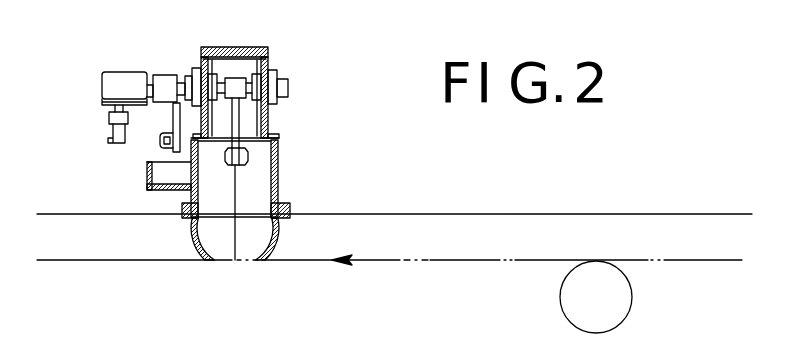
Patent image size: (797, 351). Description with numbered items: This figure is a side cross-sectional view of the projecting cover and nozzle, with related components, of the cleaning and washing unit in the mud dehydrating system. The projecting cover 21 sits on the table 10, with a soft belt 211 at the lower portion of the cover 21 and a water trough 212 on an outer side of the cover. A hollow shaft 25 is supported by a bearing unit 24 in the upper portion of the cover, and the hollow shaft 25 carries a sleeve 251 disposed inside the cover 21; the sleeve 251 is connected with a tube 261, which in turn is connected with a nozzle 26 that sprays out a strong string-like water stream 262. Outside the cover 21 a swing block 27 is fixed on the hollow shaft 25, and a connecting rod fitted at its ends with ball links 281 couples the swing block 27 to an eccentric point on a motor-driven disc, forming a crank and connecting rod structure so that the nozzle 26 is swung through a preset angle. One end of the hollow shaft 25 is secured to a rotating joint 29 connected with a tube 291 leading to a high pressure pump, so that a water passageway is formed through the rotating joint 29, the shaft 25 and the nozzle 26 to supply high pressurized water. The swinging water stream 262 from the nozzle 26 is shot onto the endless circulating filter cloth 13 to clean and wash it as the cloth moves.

The table 10 is at (449, 213).
The endless circulating filter cloth 13 is at (500, 258).
The projecting cover 21 is at (277, 138).
The soft belt 211 is at (195, 238).
The water trough 212 is at (147, 190).
The bearing unit 24 is at (275, 113).
The hollow shaft 25 is at (266, 65).
The sleeve 251 is at (233, 77).
The nozzle 26 is at (248, 153).
The tube 261 is at (230, 124).
The water stream 262 is at (240, 232).
The swing block 27 is at (172, 121).
The ball link 281 is at (166, 148).
The rotating joint 29 is at (118, 85).
The tube 291 is at (110, 128).